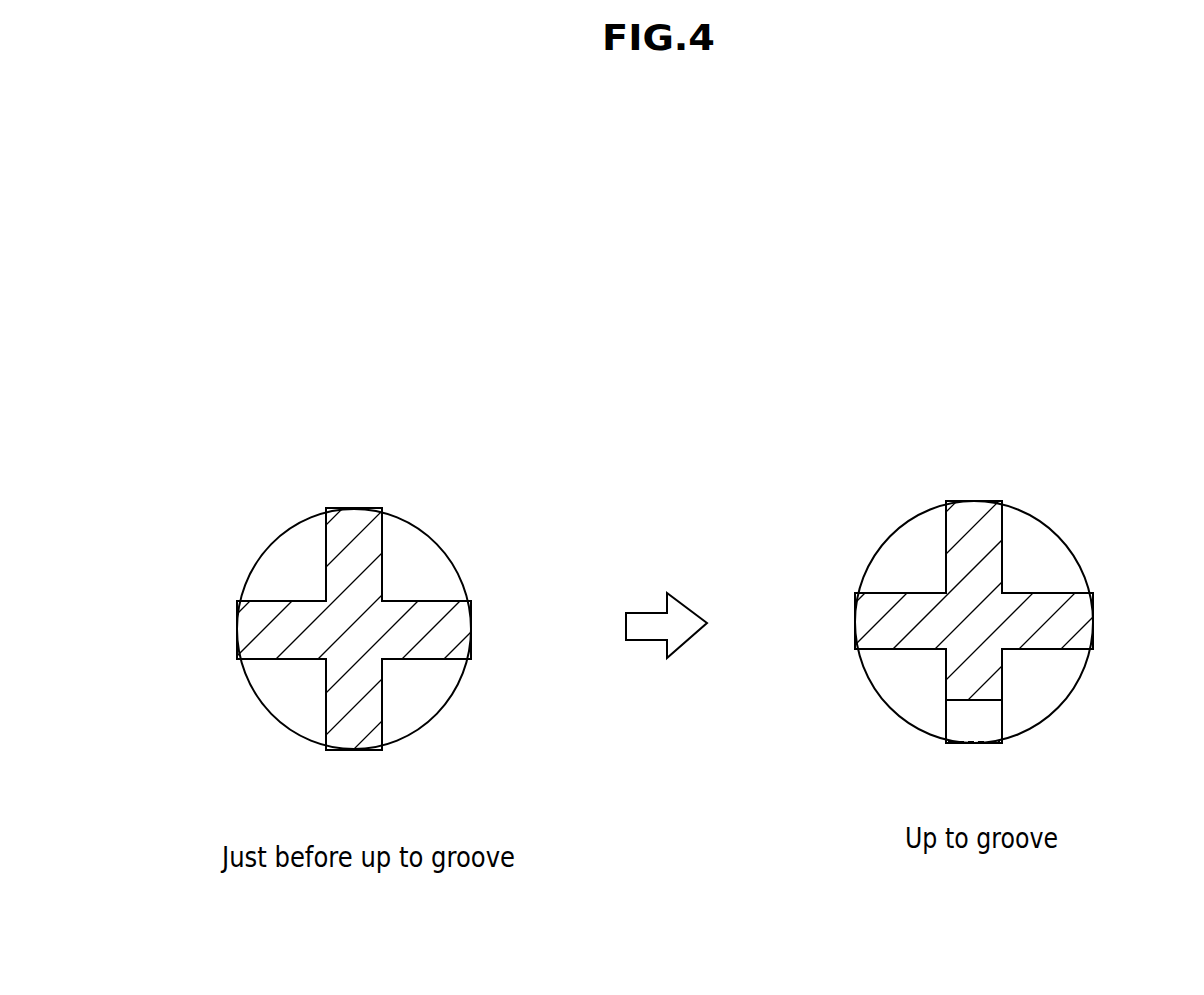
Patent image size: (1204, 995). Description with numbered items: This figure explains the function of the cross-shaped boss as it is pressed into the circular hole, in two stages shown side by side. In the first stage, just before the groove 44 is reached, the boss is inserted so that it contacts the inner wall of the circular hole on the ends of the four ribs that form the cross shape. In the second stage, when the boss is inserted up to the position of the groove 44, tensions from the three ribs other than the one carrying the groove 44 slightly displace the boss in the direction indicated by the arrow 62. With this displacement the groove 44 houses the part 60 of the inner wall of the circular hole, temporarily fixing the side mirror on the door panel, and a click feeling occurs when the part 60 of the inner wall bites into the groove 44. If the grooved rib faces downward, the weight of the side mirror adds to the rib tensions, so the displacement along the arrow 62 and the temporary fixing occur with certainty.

The groove 44 is at (987, 720).
The part of inner wall 60 is at (974, 730).
The arrow 62 is at (973, 543).